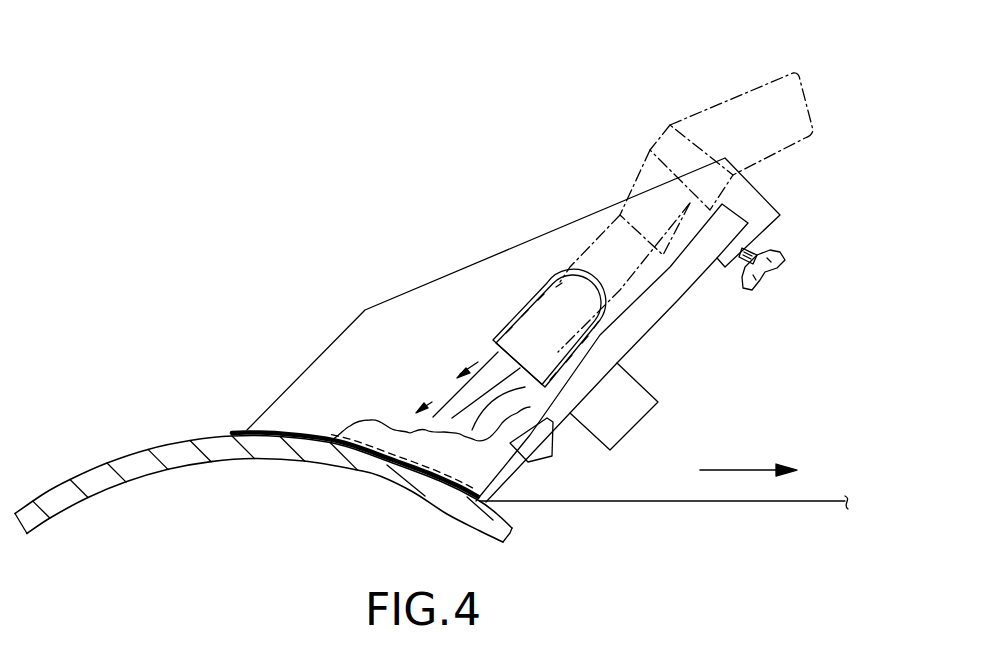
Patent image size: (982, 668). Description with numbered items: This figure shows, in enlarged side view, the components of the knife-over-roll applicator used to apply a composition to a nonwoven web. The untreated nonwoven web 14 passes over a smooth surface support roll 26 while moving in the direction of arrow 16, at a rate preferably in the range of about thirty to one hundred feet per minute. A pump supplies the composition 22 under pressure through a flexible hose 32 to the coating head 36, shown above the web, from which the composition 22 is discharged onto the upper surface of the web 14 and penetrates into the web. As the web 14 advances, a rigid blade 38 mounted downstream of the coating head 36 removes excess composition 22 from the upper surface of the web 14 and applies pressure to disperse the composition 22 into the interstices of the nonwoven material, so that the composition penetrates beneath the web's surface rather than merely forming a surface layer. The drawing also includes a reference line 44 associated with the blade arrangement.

The nonwoven web 14 is at (143, 451).
The arrow 16 is at (735, 470).
The composition 22 is at (372, 420).
The support roll 26 is at (180, 467).
The flexible hose 32 is at (731, 92).
The coating head 36 is at (520, 332).
The rigid blade 38 is at (505, 478).
The reference plane 44 is at (661, 501).